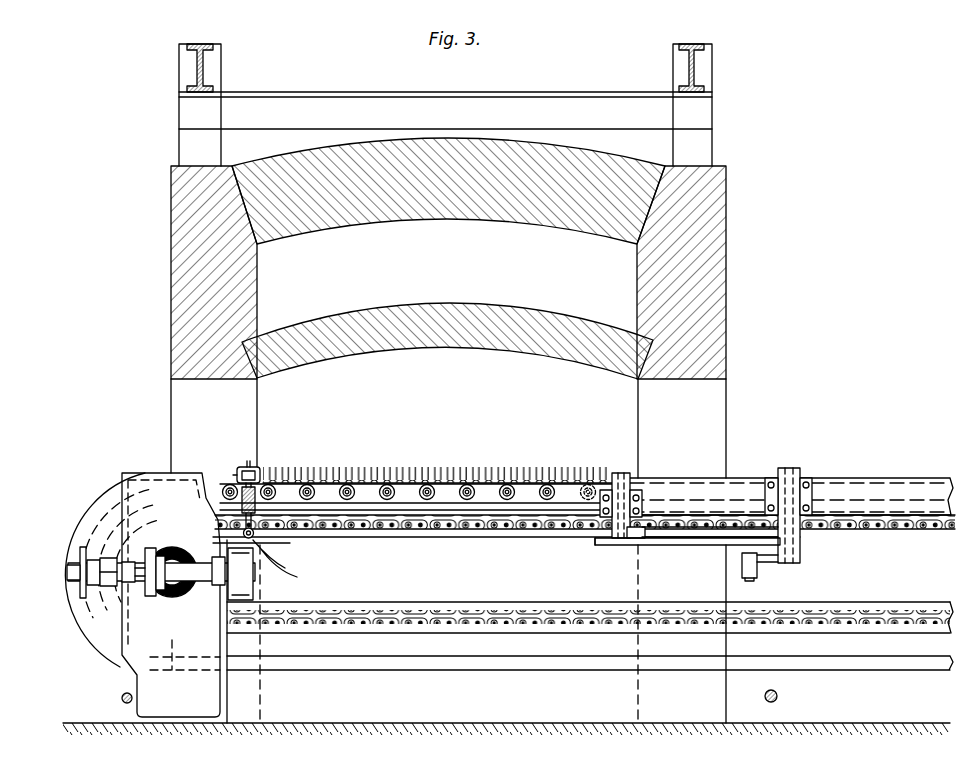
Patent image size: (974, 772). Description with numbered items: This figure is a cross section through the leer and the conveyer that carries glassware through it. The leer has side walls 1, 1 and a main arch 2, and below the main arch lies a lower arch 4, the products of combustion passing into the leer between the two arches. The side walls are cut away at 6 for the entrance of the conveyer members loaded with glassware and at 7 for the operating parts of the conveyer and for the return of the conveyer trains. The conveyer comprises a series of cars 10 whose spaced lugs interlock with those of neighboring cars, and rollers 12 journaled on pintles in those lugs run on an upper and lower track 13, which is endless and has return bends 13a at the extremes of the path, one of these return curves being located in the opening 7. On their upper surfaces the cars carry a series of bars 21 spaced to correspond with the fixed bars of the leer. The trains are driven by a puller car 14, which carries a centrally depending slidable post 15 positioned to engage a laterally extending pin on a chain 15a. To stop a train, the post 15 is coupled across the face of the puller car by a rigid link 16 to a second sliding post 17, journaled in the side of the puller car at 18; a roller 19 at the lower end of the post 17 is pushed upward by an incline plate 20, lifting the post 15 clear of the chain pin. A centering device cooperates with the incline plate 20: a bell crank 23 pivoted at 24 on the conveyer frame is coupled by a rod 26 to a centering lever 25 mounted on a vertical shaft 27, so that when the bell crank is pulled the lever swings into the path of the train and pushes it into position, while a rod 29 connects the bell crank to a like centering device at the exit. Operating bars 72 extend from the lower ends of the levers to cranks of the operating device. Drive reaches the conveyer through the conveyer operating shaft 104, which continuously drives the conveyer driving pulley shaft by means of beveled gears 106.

The side walls 1 is at (182, 275).
The arch 2 is at (467, 208).
The lower arch 4 is at (432, 315).
The cut-away opening for conveyer members 6 is at (717, 425).
The cut-away opening for conveyer operating parts 7 is at (173, 421).
The cars 10 is at (367, 483).
The rollers 12 is at (312, 493).
The track 13 is at (520, 517).
The return bends 13a is at (87, 532).
The puller car 14 is at (263, 472).
The slidable post 15 is at (250, 462).
The chain 15a is at (455, 527).
The rigid link 16 is at (258, 470).
The second sliding post 17 is at (253, 527).
The journal 18 is at (233, 477).
The roller 19 is at (290, 570).
The incline plate 20 is at (256, 565).
The bars 21 is at (423, 470).
The bell crank 23 is at (795, 555).
The pivot 24 is at (803, 500).
The centering lever 25 is at (630, 475).
The rod 26 is at (712, 527).
The vertical shaft 27 is at (602, 541).
The rod 29 is at (652, 547).
The operating bars 72 is at (122, 698).
The conveyer operating shaft 104 is at (68, 580).
The beveled gears 106 is at (167, 593).